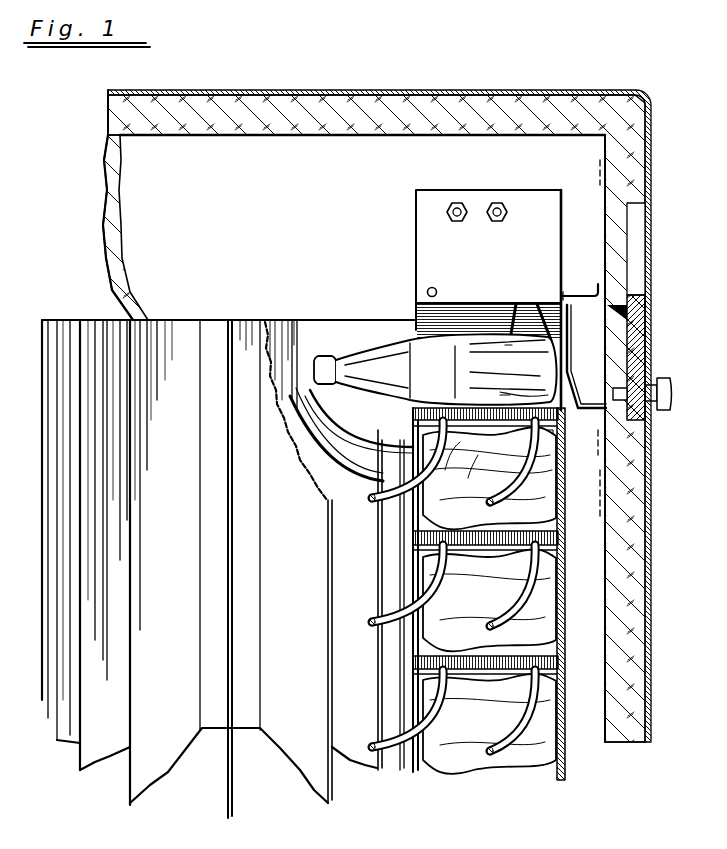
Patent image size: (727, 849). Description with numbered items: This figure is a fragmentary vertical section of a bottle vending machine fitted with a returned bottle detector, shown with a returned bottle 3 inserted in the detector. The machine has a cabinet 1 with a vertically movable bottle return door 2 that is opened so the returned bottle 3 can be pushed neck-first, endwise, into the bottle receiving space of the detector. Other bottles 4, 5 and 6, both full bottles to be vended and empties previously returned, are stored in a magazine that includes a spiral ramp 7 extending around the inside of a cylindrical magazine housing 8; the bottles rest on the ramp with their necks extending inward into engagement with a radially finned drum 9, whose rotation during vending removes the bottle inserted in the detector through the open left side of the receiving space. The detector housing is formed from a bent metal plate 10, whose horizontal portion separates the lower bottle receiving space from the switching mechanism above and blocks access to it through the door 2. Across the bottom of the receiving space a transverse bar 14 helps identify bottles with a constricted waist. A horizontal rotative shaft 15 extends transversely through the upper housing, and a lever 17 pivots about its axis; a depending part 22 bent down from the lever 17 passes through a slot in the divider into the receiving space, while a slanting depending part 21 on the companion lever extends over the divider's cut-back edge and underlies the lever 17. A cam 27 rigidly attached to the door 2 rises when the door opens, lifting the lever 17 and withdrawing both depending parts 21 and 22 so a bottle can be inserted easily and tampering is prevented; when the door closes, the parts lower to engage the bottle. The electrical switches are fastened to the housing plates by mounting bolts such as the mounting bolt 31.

The cabinet 1 is at (645, 160).
The bottle return door 2 is at (590, 156).
The returned bottle 3 is at (362, 362).
The bottle 4 is at (458, 520).
The bottle 5 is at (470, 458).
The bottle 6 is at (462, 446).
The spiral ramp 7 is at (500, 572).
The cylindrical magazine housing 8 is at (565, 752).
The radially finned drum 9 is at (222, 320).
The metal plate 10 is at (416, 254).
The transverse bar 14 is at (516, 392).
The rotative shaft 15 is at (436, 289).
The lever 17 is at (595, 290).
The slanting depending part 21 is at (527, 347).
The depending part 22 is at (512, 328).
The cam 27 is at (571, 366).
The mounting bolt 31 is at (487, 214).